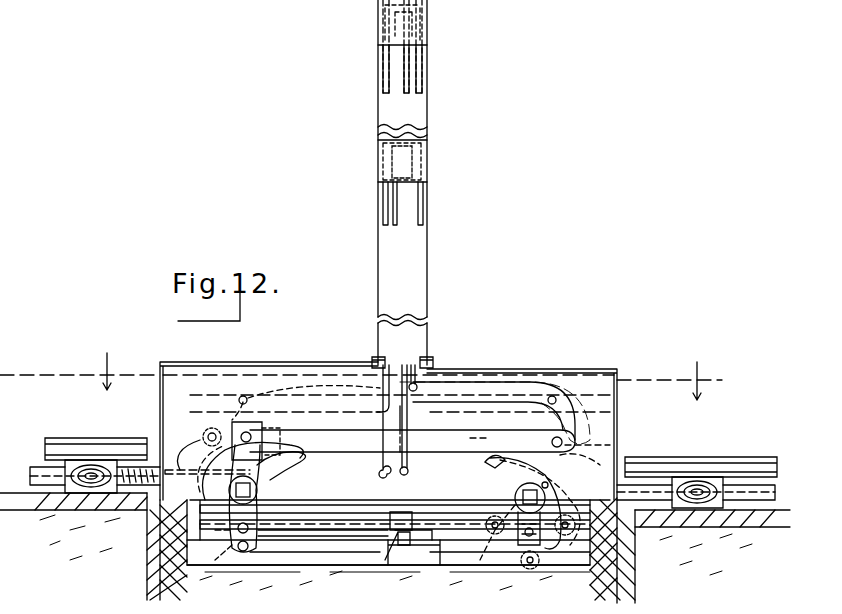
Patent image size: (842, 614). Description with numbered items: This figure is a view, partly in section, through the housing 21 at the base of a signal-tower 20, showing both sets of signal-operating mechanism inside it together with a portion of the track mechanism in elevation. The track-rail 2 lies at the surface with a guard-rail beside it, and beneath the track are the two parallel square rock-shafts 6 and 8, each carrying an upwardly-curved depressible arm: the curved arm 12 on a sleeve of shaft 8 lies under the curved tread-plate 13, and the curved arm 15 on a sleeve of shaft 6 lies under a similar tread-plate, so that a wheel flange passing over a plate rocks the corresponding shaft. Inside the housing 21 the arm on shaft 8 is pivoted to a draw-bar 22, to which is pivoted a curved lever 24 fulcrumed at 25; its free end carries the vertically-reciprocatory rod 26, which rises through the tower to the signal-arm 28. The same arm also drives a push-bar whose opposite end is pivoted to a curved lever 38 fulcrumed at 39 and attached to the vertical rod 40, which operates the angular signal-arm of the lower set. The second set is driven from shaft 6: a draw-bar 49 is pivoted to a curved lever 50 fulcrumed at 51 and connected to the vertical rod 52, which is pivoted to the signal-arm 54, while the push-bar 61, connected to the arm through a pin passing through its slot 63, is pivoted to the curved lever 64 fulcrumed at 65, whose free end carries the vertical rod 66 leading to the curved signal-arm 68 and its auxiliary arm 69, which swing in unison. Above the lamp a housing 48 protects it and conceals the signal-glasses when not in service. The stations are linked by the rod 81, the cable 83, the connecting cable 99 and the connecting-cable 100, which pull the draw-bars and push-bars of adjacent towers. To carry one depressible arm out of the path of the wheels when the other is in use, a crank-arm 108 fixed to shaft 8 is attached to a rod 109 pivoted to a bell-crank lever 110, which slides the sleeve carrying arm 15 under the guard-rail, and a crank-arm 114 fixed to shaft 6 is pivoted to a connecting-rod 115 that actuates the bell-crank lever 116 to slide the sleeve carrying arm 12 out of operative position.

The track-rail 2 is at (88, 438).
The rock-shaft 6 is at (235, 488).
The rock-shaft 8 is at (528, 505).
The curved arm 12 is at (512, 465).
The tread-plate 13 is at (373, 376).
The curved arm 15 is at (293, 470).
The signal-tower 20 is at (420, 247).
The housing 21 is at (553, 371).
The draw-bar 22 is at (440, 545).
The curved lever 24 is at (251, 471).
The fulcrum 25 is at (232, 470).
The vertically-reciprocatory rod 26 is at (380, 418).
The signal-arm 28 is at (403, 203).
The curved lever 38 is at (400, 396).
The fulcrum 39 is at (240, 398).
The vertical rod 40 is at (372, 362).
The lamp housing 48 is at (383, 162).
The draw-bar 49 is at (368, 552).
The curved lever 50 is at (612, 470).
The fulcrum 51 is at (547, 488).
The vertical rod 52 is at (412, 420).
The signal-arm 54 is at (400, 46).
The push-bar 61 is at (462, 428).
The slot 63 is at (243, 434).
The curved lever 64 is at (572, 425).
The fulcrum 65 is at (556, 401).
The vertical rod 66 is at (433, 362).
The curved signal-arm 68 is at (381, 70).
The auxiliary arm 69 is at (423, 68).
The rod 81 is at (735, 528).
The cable 83 is at (88, 512).
The connecting cable 99 is at (45, 455).
The connecting-cable 100 is at (785, 488).
The crank-arm 108 is at (548, 540).
The rod 109 is at (438, 525).
The bell-crank lever 110 is at (338, 515).
The crank-arm 114 is at (238, 530).
The connecting-rod 115 is at (300, 532).
The bell-crank lever 116 is at (416, 515).